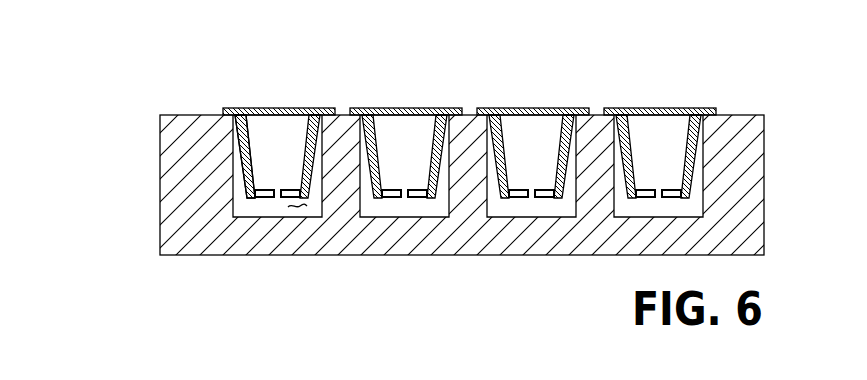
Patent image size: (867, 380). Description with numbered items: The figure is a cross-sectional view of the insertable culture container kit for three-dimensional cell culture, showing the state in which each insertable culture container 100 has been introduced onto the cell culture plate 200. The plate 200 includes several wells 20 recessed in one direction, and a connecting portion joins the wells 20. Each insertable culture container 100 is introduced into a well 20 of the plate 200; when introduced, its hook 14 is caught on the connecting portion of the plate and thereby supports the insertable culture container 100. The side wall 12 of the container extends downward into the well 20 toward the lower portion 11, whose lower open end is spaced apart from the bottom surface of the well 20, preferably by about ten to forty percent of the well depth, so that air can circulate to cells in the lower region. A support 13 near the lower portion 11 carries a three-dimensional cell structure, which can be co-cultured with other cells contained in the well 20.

The cell culture plate 200 is at (156, 115).
The insertable culture container for three-dimensional cell culture 100 is at (221, 105).
The hook 14 is at (235, 113).
The support 13 is at (263, 189).
The side wall 12 is at (244, 172).
The lower portion 11 is at (277, 198).
The well 20 is at (292, 208).